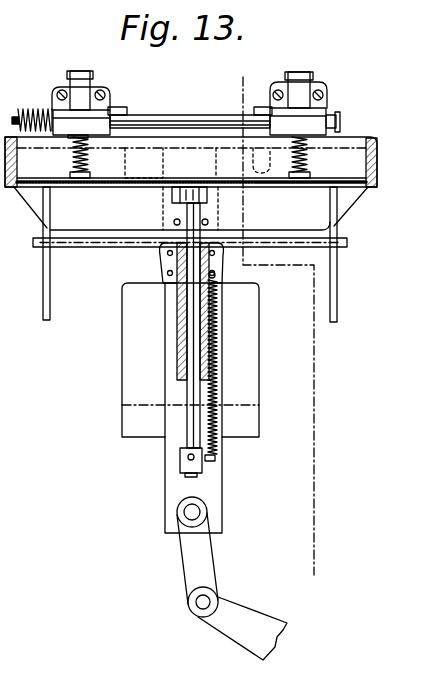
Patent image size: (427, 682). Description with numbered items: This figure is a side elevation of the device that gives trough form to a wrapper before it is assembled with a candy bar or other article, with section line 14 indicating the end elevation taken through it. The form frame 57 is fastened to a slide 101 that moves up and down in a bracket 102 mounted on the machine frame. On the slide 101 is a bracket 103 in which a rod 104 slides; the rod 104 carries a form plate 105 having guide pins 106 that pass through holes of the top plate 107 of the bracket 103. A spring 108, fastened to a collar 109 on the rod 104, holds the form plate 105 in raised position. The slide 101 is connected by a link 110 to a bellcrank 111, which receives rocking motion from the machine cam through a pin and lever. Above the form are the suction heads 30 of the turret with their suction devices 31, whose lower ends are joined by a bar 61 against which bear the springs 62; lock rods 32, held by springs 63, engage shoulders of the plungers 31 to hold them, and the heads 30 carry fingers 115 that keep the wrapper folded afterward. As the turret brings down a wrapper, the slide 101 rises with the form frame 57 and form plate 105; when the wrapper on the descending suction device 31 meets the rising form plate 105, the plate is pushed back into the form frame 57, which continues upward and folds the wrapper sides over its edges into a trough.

The section line 14- 14 is at (243, 77).
The suction head 30 is at (60, 84).
The suction device 31 is at (72, 160).
The lock rod 32 is at (241, 115).
The form frame 57 is at (378, 170).
The bar 61 is at (171, 186).
The spring 62 is at (87, 175).
The spring 63 is at (30, 108).
The slide 101 is at (215, 492).
The bracket 102 is at (122, 384).
The bracket 103 is at (160, 262).
The rod 104 is at (188, 425).
The form plate 105 is at (368, 190).
The guide pin 106 is at (44, 318).
The top plate 107 is at (348, 243).
The spring 108 is at (217, 380).
The collar 109 is at (180, 462).
The link 110 is at (187, 562).
The bellcrank 111 is at (275, 626).
The finger 115 is at (113, 113).